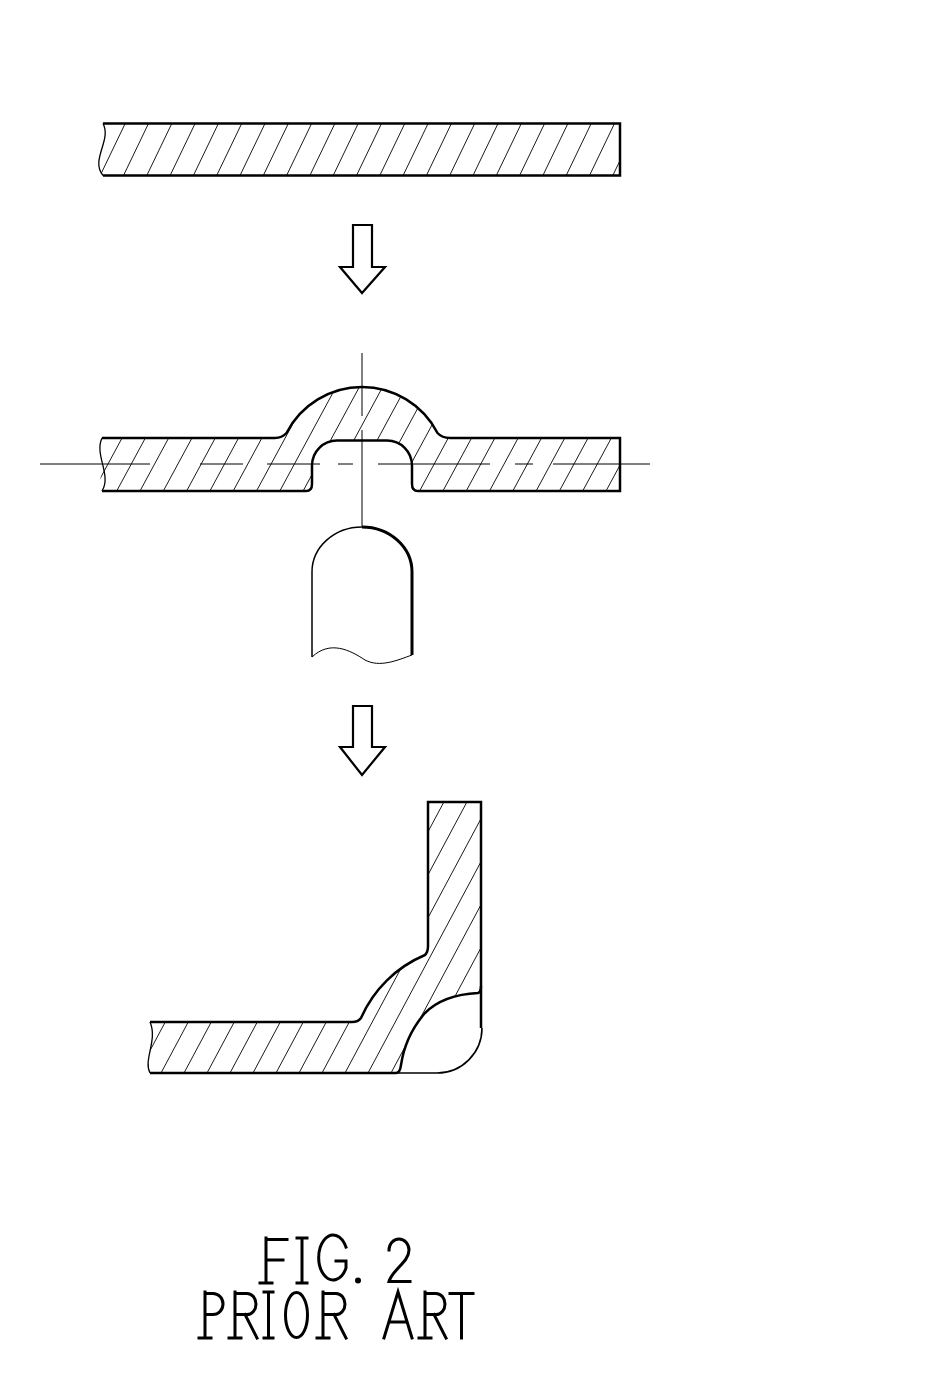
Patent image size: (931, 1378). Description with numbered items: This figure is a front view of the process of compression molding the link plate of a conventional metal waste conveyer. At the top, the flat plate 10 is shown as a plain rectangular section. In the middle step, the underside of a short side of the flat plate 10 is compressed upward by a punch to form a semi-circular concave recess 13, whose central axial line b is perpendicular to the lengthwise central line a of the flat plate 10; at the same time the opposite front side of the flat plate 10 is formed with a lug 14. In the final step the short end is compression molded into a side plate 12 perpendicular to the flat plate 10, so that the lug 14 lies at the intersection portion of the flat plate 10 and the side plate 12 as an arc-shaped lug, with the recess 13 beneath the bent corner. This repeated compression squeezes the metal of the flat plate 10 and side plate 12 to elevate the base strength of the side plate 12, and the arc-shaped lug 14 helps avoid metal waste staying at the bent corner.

The flat plate 10 is at (263, 124).
The side plate 12 is at (463, 916).
The semi-circular concave recess 13 is at (331, 465).
The lug 14 is at (431, 414).
The lengthwise central line a is at (78, 463).
The central axial line b is at (362, 362).